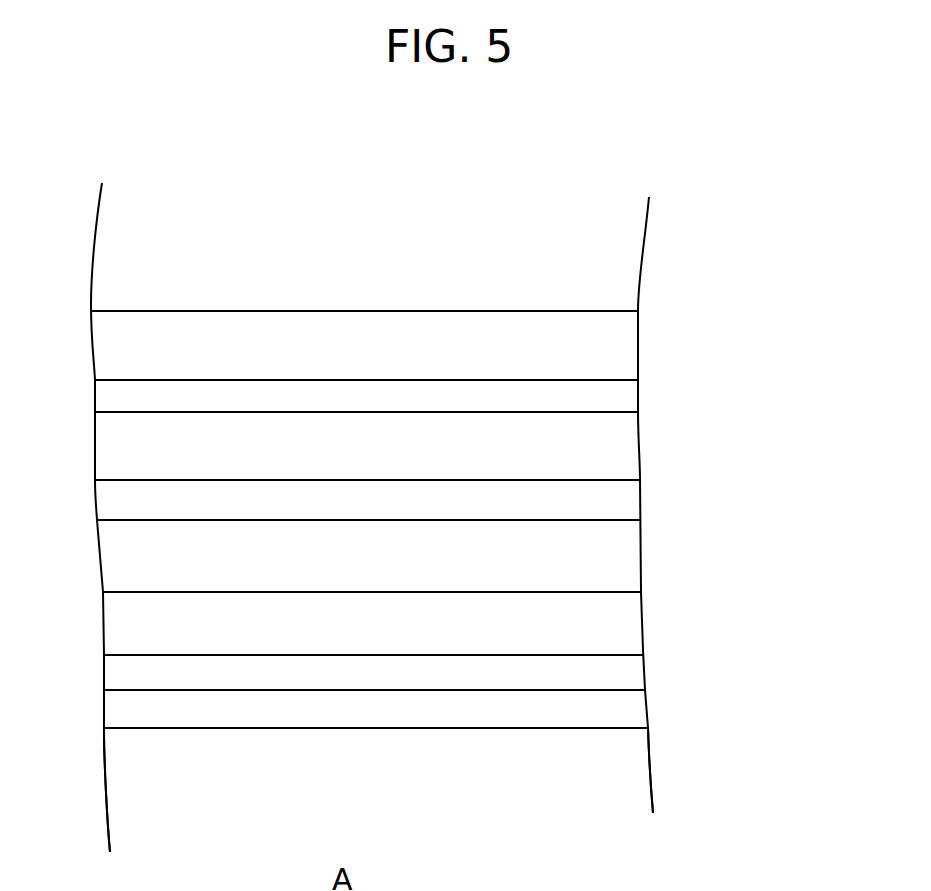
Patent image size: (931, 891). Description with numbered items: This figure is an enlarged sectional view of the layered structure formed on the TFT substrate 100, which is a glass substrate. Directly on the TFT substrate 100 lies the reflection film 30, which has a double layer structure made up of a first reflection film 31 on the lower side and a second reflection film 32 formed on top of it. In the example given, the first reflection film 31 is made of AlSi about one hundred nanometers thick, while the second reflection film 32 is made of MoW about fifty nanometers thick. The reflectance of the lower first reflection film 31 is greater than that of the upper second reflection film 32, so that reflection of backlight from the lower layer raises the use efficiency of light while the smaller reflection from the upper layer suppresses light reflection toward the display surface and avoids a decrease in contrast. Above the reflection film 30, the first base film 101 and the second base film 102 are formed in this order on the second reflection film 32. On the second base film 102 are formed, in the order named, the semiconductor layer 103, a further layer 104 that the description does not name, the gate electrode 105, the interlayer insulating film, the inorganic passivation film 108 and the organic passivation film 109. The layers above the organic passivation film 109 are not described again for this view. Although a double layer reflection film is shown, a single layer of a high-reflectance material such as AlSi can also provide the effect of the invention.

The organic passivation film 109 is at (623, 268).
The inorganic passivation film 108 is at (623, 345).
The gate electrode 105 is at (623, 398).
The functional layer 104 is at (620, 447).
The semiconductor layer 103 is at (620, 500).
The second base film 102 is at (620, 555).
The first base film 101 is at (620, 618).
The second reflection film 32 is at (628, 673).
The first reflection film 31 is at (633, 708).
The reflection film 30 is at (742, 655).
The TFT substrate 100 is at (633, 777).